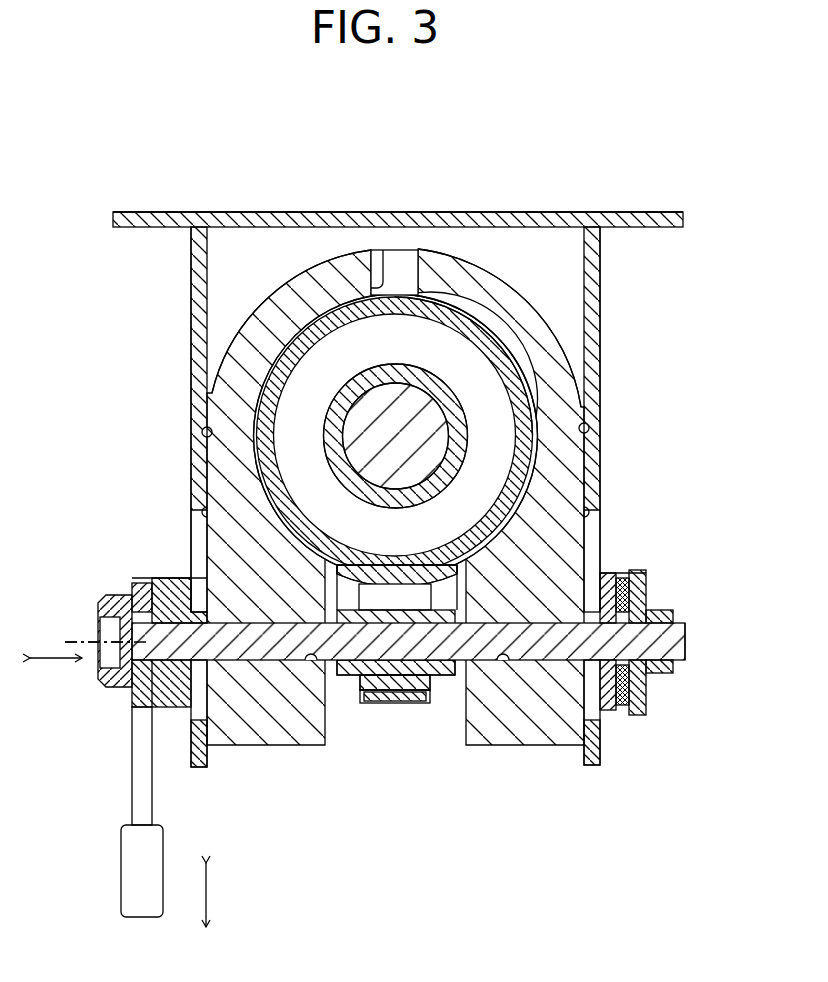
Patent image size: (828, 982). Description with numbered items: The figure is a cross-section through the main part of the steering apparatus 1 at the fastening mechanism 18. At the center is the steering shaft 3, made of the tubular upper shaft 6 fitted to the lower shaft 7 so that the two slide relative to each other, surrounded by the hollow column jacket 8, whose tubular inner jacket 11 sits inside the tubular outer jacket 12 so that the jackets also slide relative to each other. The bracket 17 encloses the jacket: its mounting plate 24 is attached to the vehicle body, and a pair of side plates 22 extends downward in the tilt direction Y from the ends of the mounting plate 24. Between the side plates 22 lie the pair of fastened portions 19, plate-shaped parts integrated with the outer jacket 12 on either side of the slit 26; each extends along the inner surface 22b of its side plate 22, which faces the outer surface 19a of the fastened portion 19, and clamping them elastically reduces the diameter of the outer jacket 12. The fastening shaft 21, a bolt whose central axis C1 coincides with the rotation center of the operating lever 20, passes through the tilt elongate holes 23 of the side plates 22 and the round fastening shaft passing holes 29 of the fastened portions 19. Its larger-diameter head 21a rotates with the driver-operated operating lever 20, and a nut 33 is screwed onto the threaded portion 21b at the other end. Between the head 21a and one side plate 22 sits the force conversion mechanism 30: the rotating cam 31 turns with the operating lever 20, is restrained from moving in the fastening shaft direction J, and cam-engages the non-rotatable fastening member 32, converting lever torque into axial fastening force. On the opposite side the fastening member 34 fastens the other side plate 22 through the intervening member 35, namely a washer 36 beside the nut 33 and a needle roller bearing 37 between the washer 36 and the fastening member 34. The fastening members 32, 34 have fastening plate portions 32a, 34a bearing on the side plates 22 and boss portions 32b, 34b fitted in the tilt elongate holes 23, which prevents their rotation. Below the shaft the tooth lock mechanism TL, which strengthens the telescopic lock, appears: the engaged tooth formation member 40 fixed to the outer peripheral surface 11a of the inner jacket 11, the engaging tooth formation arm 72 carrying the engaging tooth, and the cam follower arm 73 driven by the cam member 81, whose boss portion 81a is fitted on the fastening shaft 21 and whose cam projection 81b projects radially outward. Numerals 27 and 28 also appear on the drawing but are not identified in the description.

The steering apparatus 1 is at (616, 188).
The steering shaft 3 is at (150, 345).
The upper shaft 6 is at (363, 427).
The lower shaft 7 is at (337, 403).
The column jacket 8 is at (563, 177).
The inner jacket 11 is at (512, 347).
The outer peripheral surface of the inner jacket 11a is at (453, 309).
The outer jacket 12 is at (500, 275).
The bracket 17 is at (603, 266).
The fastening mechanism 18 is at (121, 724).
The fastened portions 19 is at (256, 735).
The outer surface of the fastened portion 19a is at (193, 460).
The operating lever 20 is at (124, 872).
The fastening shaft 21 is at (545, 661).
The head 21a is at (112, 694).
The threaded portion 21b is at (677, 660).
The side plates 22 is at (192, 293).
The inner surface of the side plate 22b is at (202, 432).
The tilt elongate holes 23 is at (203, 510).
The mounting plate 24 is at (283, 212).
The slit 26 is at (337, 713).
The key 27 is at (380, 268).
The key groove 28 is at (397, 284).
The fastening shaft passing hole 29 is at (303, 661).
The force conversion mechanism 30 is at (185, 548).
The rotating cam 31 is at (145, 583).
The fastening member 32 is at (180, 583).
The fastening plate portion 32a is at (183, 707).
The boss portion 32b is at (208, 736).
The nut 33 is at (661, 610).
The fastening member 34 is at (609, 574).
The fastening plate portion 34a is at (606, 672).
The boss portion 34b is at (585, 700).
The intervening member 35 is at (688, 768).
The washer 36 is at (642, 715).
The needle roller bearing 37 is at (622, 705).
The engaged tooth formation member 40 is at (385, 584).
The engaging tooth formation arm 72 is at (412, 590).
The cam follower arm 73 is at (392, 703).
The cam member 81 is at (375, 700).
The boss portion 81a is at (445, 670).
The cam projection 81b is at (416, 690).
The tooth lock mechanism TL is at (360, 574).
The central axis C1 is at (78, 641).
The fastening shaft direction J is at (62, 656).
The tilt direction Y is at (210, 892).